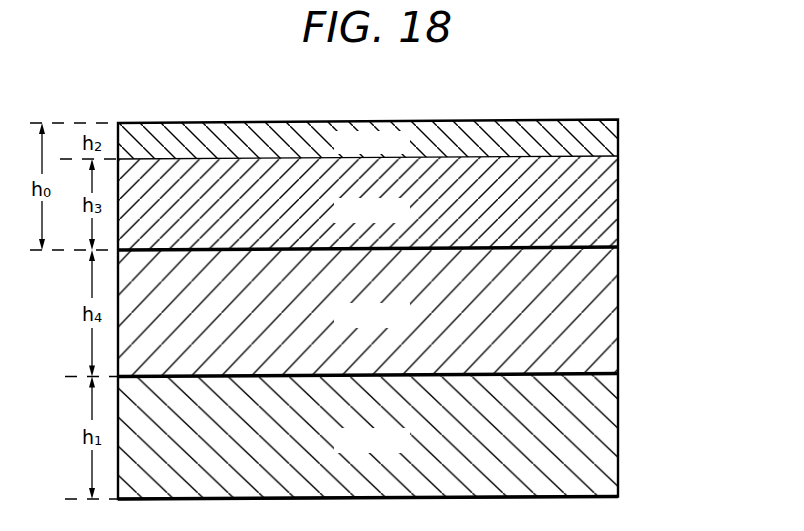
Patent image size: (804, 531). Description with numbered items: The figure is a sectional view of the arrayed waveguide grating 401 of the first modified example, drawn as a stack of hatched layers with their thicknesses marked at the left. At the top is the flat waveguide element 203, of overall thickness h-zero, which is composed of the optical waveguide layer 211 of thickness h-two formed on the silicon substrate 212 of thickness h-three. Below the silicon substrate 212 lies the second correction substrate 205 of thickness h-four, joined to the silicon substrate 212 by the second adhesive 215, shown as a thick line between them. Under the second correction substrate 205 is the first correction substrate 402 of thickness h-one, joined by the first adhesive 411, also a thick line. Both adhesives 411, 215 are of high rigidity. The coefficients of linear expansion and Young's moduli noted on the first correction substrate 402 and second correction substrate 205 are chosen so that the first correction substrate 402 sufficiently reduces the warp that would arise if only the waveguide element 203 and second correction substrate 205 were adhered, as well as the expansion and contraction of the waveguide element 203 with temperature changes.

The arrayed waveguide grating 401 is at (442, 267).
The flat waveguide element 203 is at (442, 183).
The optical waveguide layer 211 is at (610, 134).
The silicon substrate 212 is at (404, 203).
The second adhesive 215 is at (612, 254).
The second correction substrate 205 is at (612, 316).
The first adhesive 411 is at (612, 382).
The first correction substrate 402 is at (612, 441).